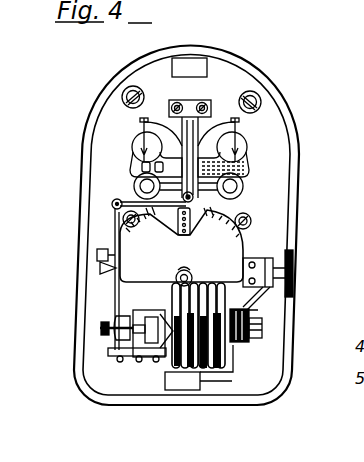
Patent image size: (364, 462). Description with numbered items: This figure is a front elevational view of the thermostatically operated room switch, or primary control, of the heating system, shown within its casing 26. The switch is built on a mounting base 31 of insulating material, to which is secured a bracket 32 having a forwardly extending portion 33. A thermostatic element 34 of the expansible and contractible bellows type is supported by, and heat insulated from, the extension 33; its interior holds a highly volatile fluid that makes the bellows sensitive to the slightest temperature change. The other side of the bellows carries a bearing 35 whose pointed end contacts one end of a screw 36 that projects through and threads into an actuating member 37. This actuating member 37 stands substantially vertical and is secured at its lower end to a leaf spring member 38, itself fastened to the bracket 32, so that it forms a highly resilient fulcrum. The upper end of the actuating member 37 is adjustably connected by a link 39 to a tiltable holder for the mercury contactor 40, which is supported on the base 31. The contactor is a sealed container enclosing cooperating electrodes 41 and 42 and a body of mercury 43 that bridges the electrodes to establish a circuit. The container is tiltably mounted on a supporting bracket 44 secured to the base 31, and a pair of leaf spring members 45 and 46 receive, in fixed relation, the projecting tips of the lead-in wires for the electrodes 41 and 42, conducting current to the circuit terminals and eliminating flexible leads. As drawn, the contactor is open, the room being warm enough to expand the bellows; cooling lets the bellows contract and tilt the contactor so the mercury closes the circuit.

The housing casing 26 is at (103, 81).
The mounting base 31 is at (290, 158).
The bracket 32 is at (151, 311).
The forwardly extending portion 33 is at (242, 355).
The thermostatic element 34 is at (213, 370).
The bearing 35 is at (152, 342).
The screw 36 is at (103, 329).
The actuating member 37 is at (114, 297).
The leaf spring member 38 is at (127, 360).
The link 39 is at (117, 198).
The mercury contactor 40 is at (121, 159).
The electrode 41 is at (127, 160).
The electrode 42 is at (140, 173).
The body of mercury 43 is at (243, 176).
The supporting bracket 44 is at (194, 101).
The leaf spring member 45 is at (157, 121).
The leaf spring member 46 is at (233, 123).